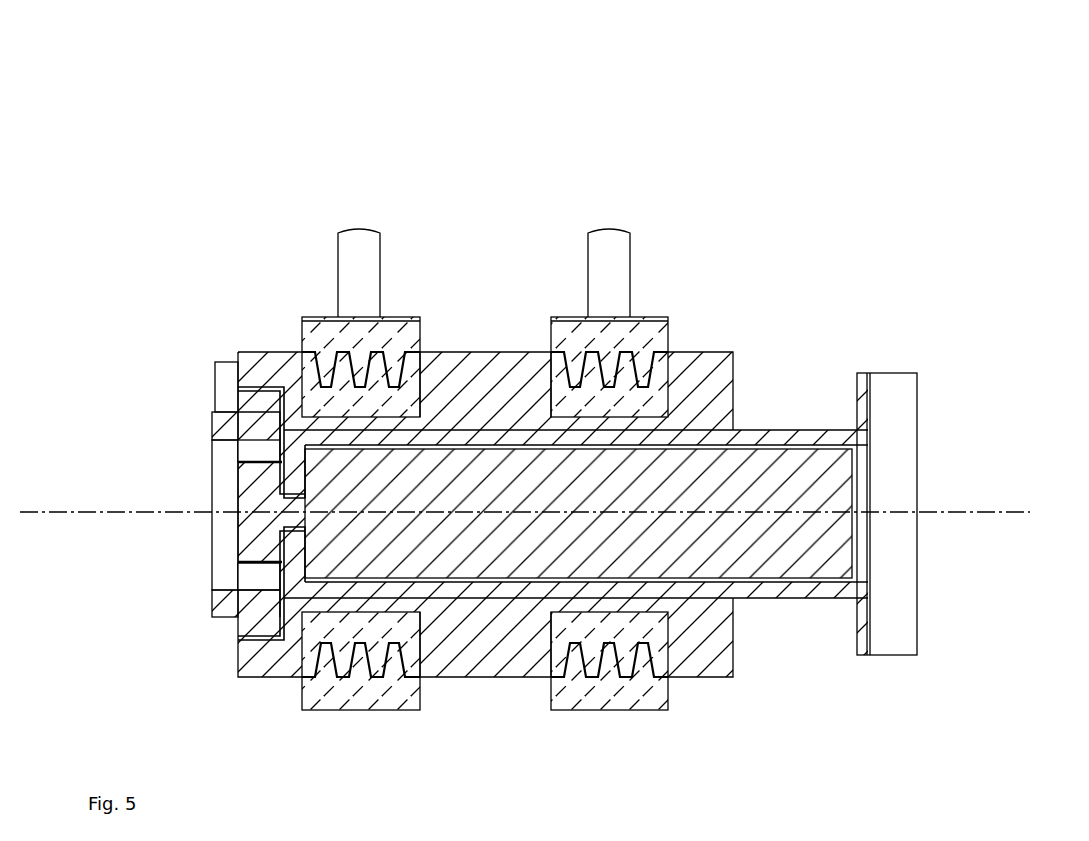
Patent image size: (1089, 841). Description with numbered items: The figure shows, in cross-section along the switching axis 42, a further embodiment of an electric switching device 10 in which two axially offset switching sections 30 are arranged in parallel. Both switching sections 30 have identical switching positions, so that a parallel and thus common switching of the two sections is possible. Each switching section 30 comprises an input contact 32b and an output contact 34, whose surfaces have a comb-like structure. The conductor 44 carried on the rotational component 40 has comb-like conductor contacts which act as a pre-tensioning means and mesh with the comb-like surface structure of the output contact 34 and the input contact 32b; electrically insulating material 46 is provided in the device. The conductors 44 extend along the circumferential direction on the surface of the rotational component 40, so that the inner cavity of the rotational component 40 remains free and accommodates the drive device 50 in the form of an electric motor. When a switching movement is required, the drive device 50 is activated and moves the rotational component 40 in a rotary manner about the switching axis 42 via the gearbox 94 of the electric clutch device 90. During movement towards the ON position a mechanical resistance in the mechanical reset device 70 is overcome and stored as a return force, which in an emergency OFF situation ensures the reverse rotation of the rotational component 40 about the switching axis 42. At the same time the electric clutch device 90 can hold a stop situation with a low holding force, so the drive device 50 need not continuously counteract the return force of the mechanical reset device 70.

The electric switching device 10 is at (279, 73).
The switching section 30 is at (359, 202).
The input contact 32b is at (323, 335).
The output contact 34 is at (322, 709).
The rotational component 40 is at (759, 400).
The switching axis 42 is at (1015, 503).
The conductor 44 is at (413, 392).
The electrically insulating material 46 is at (450, 365).
The drive device 50 is at (720, 558).
The mechanical reset device 70 is at (890, 378).
The electrical clutch device 90 is at (227, 365).
The gearbox 94 is at (225, 558).